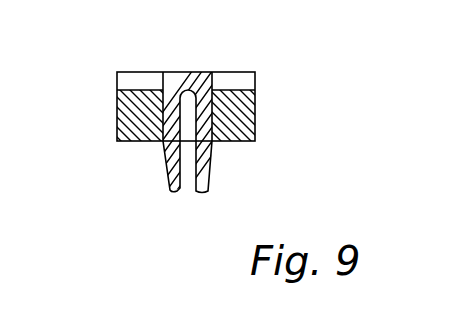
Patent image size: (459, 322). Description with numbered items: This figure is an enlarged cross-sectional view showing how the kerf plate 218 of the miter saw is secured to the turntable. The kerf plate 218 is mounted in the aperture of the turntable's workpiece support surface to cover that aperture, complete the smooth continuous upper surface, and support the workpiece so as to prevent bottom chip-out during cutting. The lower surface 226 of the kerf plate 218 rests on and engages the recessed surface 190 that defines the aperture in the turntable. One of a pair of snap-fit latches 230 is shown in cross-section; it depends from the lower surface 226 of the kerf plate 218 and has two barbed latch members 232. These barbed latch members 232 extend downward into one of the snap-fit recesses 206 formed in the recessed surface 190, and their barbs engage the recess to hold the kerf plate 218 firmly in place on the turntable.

The kerf plate 218 is at (140, 72).
The recessed surface 190 is at (129, 88).
The snap-fit recesses 206 is at (202, 100).
The lower surface 226 is at (242, 92).
The barbed latch members 232 is at (165, 168).
The snap-fit latches 230 is at (182, 199).